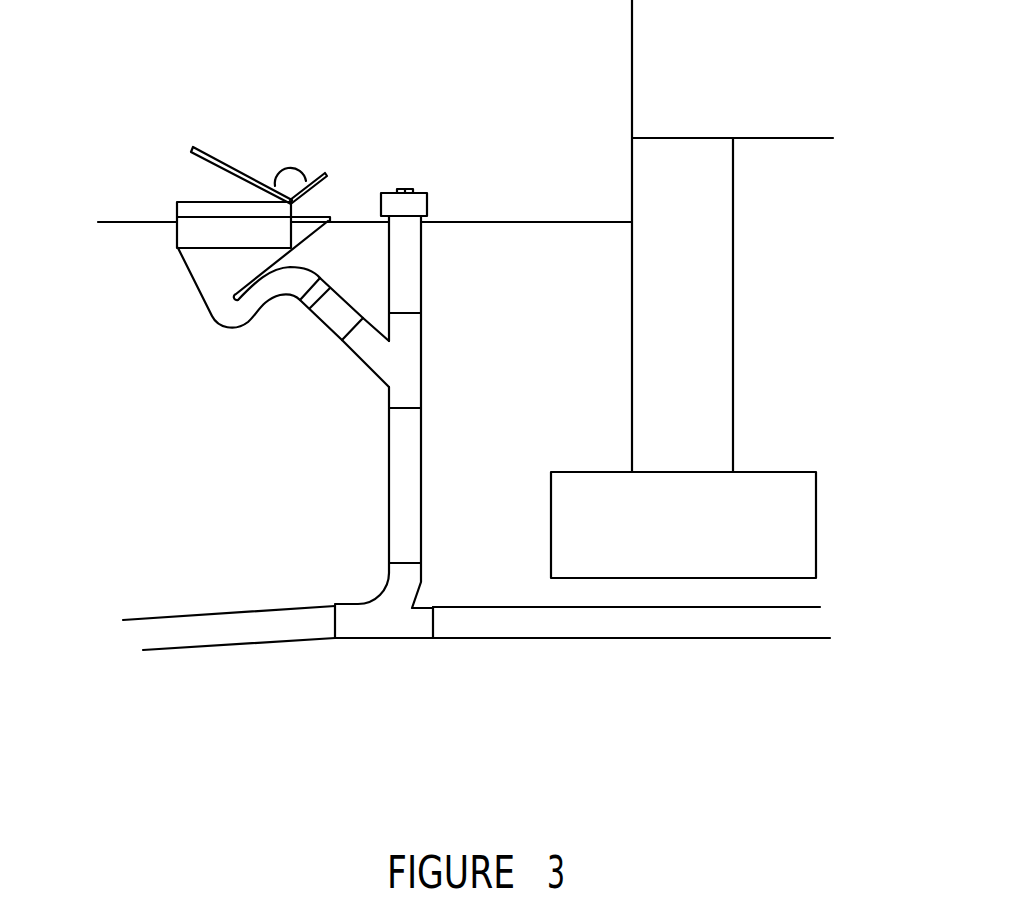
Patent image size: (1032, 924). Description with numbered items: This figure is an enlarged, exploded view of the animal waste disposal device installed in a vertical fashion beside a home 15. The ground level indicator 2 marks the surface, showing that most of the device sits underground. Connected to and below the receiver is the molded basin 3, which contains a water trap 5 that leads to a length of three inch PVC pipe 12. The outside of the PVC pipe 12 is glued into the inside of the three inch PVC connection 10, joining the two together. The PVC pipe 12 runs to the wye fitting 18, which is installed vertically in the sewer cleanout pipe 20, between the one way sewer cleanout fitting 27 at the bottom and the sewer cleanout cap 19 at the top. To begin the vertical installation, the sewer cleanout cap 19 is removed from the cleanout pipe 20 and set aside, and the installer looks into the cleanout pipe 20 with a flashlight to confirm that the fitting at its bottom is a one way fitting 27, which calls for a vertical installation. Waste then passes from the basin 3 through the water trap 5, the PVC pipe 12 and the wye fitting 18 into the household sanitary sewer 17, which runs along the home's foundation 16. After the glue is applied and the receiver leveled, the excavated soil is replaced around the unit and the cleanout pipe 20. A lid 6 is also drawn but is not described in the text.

The ground level indicator 2 is at (139, 223).
The molded basin 3 is at (218, 265).
The water trap 5 is at (243, 315).
The lid 6 is at (260, 173).
The PVC connection 10 is at (323, 275).
The PVC pipe 12 is at (330, 318).
The home 15 is at (699, 105).
The foundation 16 is at (712, 358).
The household sanitary sewer 17 is at (565, 628).
The wye fitting 18 is at (415, 347).
The sewer cleanout cap 19 is at (423, 203).
The sewer cleanout pipe 20 is at (410, 262).
The one way sewer cleanout fitting 27 is at (388, 627).